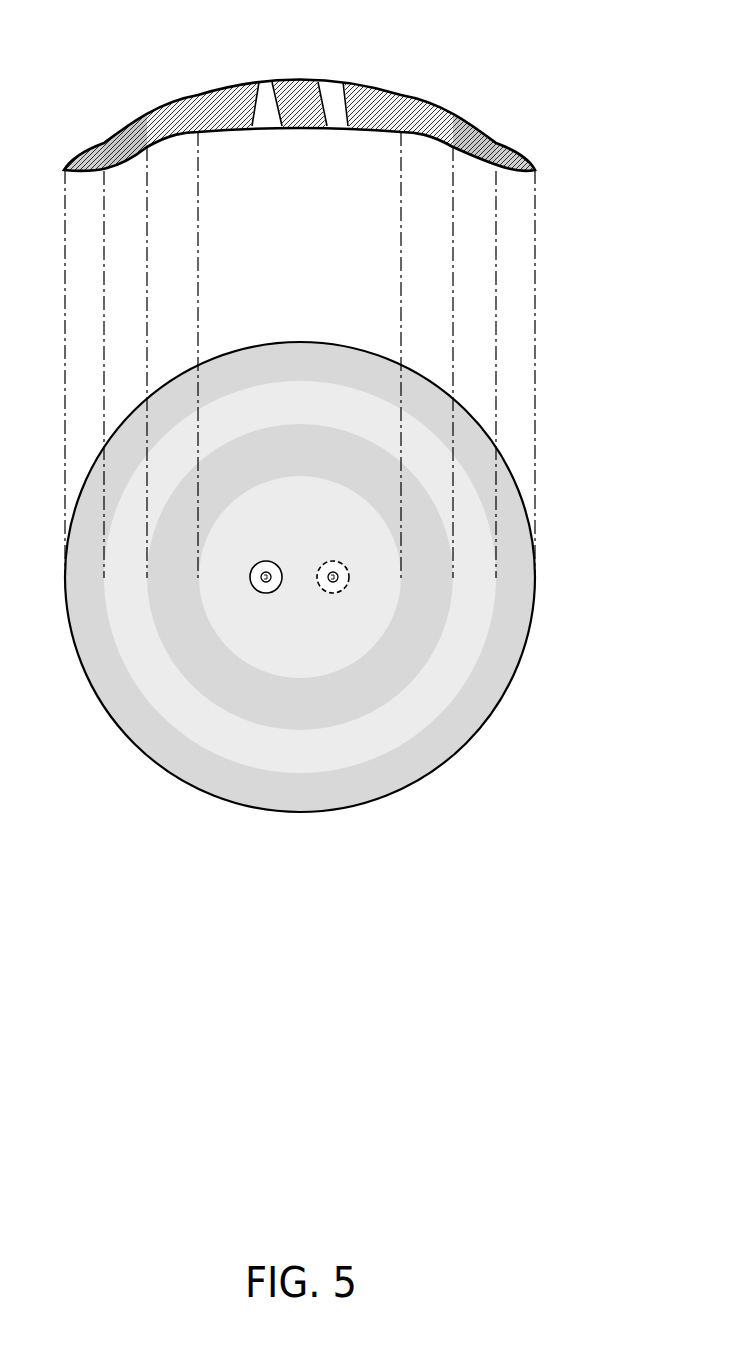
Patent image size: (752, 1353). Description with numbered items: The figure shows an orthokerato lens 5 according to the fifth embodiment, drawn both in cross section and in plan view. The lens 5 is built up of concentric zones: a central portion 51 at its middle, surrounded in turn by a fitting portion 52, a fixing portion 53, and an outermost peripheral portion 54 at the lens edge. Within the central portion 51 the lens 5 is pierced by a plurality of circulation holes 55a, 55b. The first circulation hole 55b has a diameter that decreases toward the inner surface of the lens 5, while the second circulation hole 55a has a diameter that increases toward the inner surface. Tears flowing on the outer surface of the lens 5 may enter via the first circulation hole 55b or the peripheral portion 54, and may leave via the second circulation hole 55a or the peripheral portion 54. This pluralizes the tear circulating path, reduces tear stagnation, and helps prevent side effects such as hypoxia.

The lens 5 is at (431, 63).
The central portion 51 is at (323, 653).
The fitting portion 52 is at (383, 673).
The fixing portion 53 is at (442, 680).
The peripheral portion 54 is at (500, 672).
The second circulation hole 55a is at (263, 119).
The first circulation hole 55b is at (327, 118).